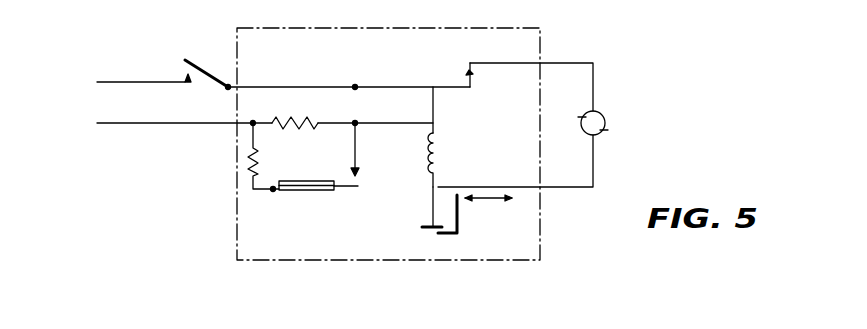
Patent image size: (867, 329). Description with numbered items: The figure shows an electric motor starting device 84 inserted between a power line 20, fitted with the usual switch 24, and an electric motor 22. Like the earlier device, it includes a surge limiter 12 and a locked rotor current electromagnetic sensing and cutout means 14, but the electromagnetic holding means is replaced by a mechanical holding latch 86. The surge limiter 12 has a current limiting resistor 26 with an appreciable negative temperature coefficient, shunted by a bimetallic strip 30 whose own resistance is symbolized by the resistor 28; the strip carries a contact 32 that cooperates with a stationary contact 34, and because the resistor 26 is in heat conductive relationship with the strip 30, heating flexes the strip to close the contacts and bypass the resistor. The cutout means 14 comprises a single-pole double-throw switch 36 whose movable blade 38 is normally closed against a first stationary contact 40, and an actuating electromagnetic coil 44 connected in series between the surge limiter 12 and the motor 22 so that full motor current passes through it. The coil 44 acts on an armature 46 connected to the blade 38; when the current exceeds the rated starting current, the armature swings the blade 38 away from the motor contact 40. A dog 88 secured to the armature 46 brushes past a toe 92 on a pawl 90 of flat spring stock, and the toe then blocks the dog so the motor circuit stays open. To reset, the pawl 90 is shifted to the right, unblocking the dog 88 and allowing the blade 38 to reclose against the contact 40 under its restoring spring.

The surge limiter 12 is at (280, 192).
The locked rotor current electromagnetic sensing and motor cutout means 14 is at (440, 157).
The power line 20 is at (127, 104).
The electric motor 22 is at (607, 122).
The switch 24 is at (209, 68).
The current limiting resistor 26 is at (297, 128).
The resistor 28 is at (245, 158).
The bimetallic strip 30 is at (315, 182).
The contact 32 is at (343, 190).
The stationary contact 34 is at (361, 172).
The single-pole double-throw switch 36 is at (464, 72).
The movable blade 38 is at (385, 83).
The first stationary contact 40 is at (472, 78).
The actuating electromagnetic coil 44 is at (434, 135).
The armature 46 is at (434, 103).
The electric motor starting device 84 is at (545, 50).
The mechanical holding latch 86 is at (412, 224).
The dog 88 is at (421, 229).
The pawl 90 is at (460, 214).
The toe 92 is at (450, 233).